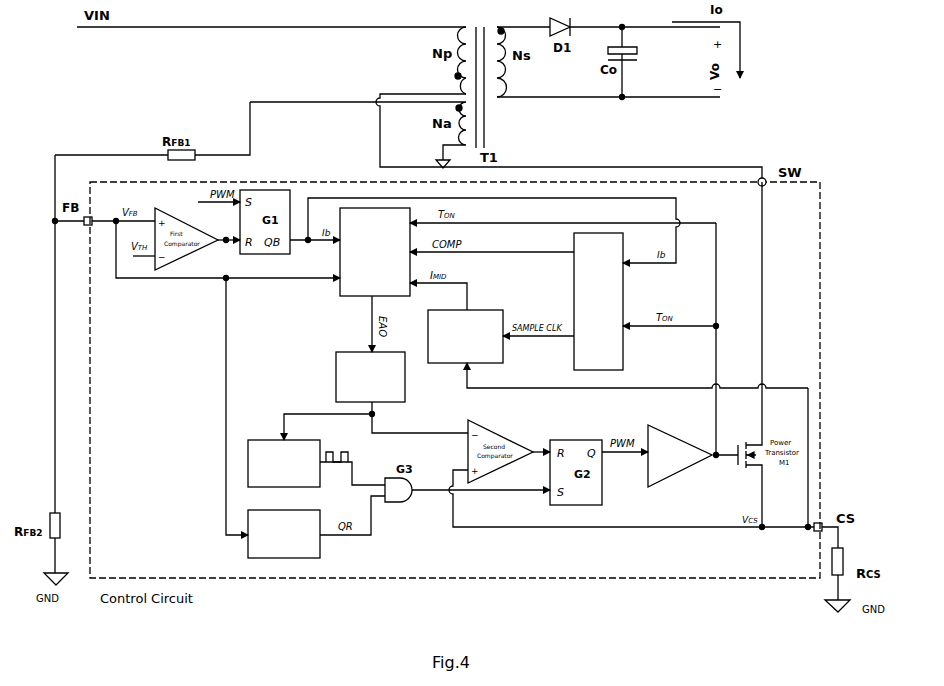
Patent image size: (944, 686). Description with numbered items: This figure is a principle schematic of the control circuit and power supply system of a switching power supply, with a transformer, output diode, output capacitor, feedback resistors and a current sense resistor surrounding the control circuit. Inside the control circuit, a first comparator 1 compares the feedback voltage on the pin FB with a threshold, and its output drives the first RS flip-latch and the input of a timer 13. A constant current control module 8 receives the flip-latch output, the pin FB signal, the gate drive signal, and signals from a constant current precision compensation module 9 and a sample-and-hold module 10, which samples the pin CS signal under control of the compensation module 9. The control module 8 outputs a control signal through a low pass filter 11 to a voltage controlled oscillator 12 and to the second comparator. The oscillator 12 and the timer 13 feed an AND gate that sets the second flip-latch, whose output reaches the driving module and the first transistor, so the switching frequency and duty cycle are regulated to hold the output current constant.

The first comparator 1 is at (680, 456).
The constant current control module 8 is at (375, 252).
The constant current precision compensation module 9 is at (598, 301).
The sample-and-hold module 10 is at (465, 336).
The low pass filter 11 is at (370, 377).
The voltage controlled oscillator 12 is at (284, 463).
The timer 13 is at (284, 534).